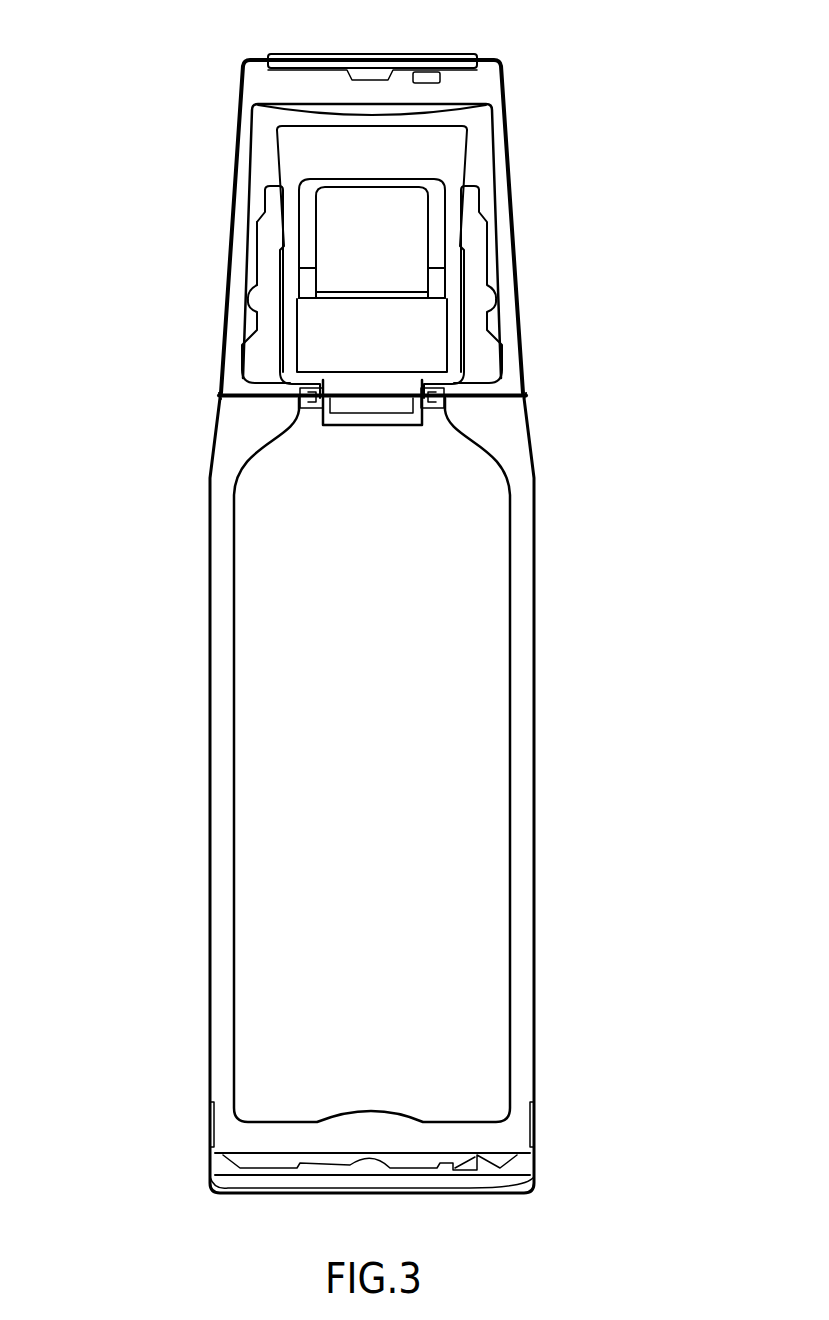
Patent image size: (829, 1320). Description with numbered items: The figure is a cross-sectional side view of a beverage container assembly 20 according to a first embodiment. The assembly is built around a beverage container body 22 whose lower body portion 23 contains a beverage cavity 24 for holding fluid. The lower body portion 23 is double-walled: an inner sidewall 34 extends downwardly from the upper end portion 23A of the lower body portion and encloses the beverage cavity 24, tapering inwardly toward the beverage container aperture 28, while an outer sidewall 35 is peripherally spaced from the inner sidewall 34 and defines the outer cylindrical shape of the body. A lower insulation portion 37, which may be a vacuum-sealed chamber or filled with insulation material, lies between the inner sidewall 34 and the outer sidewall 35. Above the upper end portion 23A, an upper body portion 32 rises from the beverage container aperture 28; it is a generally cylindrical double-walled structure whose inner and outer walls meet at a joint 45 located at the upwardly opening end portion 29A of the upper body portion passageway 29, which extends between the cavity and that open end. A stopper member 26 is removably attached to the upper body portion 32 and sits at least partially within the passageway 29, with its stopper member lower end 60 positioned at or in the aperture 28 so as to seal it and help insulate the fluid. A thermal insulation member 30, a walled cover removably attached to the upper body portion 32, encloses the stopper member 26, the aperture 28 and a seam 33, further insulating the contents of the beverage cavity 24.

The beverage container assembly 20 is at (588, 45).
The beverage container body 22 is at (336, 795).
The lower body portion 23 is at (537, 593).
The upper end portion of the lower body portion 23A is at (521, 384).
The beverage cavity 24 is at (392, 805).
The stopper member 26 is at (481, 186).
The beverage container aperture 28 is at (431, 418).
The upper body portion passageway 29 is at (482, 285).
The upwardly opening end portion 29A is at (267, 200).
The thermal insulation member 30 is at (493, 322).
The upper body portion 32 is at (259, 242).
The seam 33 is at (481, 191).
The inner sidewall 34 is at (500, 714).
The outer sidewall 35 is at (208, 713).
The lower insulation portion 37 is at (222, 655).
The joint 45 is at (479, 199).
The stopper member lower end 60 is at (366, 432).